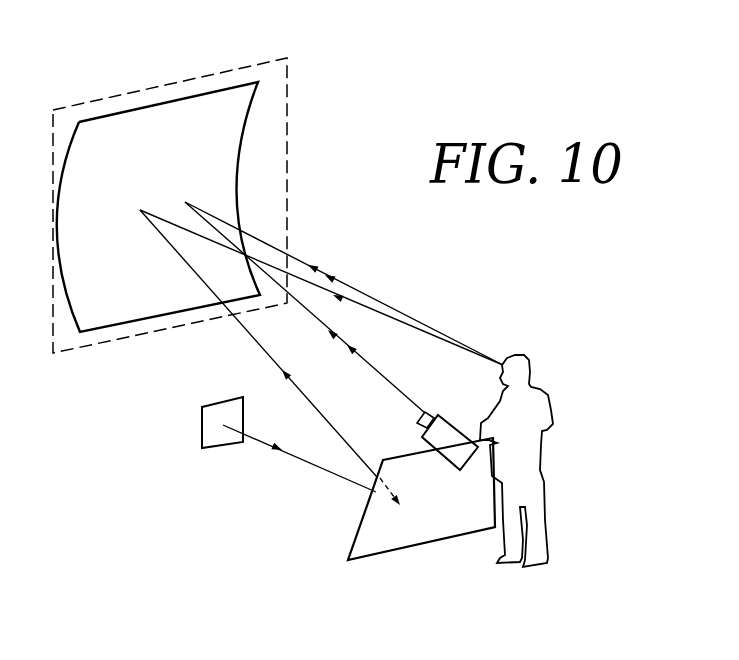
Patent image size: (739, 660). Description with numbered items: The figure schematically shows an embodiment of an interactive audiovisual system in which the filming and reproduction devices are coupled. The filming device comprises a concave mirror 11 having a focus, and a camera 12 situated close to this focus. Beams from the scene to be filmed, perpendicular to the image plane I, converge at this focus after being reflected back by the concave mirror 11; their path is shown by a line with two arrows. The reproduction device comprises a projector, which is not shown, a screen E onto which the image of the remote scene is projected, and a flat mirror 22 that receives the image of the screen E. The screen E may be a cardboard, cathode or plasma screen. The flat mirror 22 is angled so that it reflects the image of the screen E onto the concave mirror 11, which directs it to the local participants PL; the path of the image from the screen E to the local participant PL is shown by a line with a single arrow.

The concave mirror 11 is at (98, 130).
The image plane I is at (287, 155).
The screen E is at (204, 430).
The flat mirror 22 is at (371, 537).
The camera 12 is at (453, 455).
The local participants PL is at (530, 458).